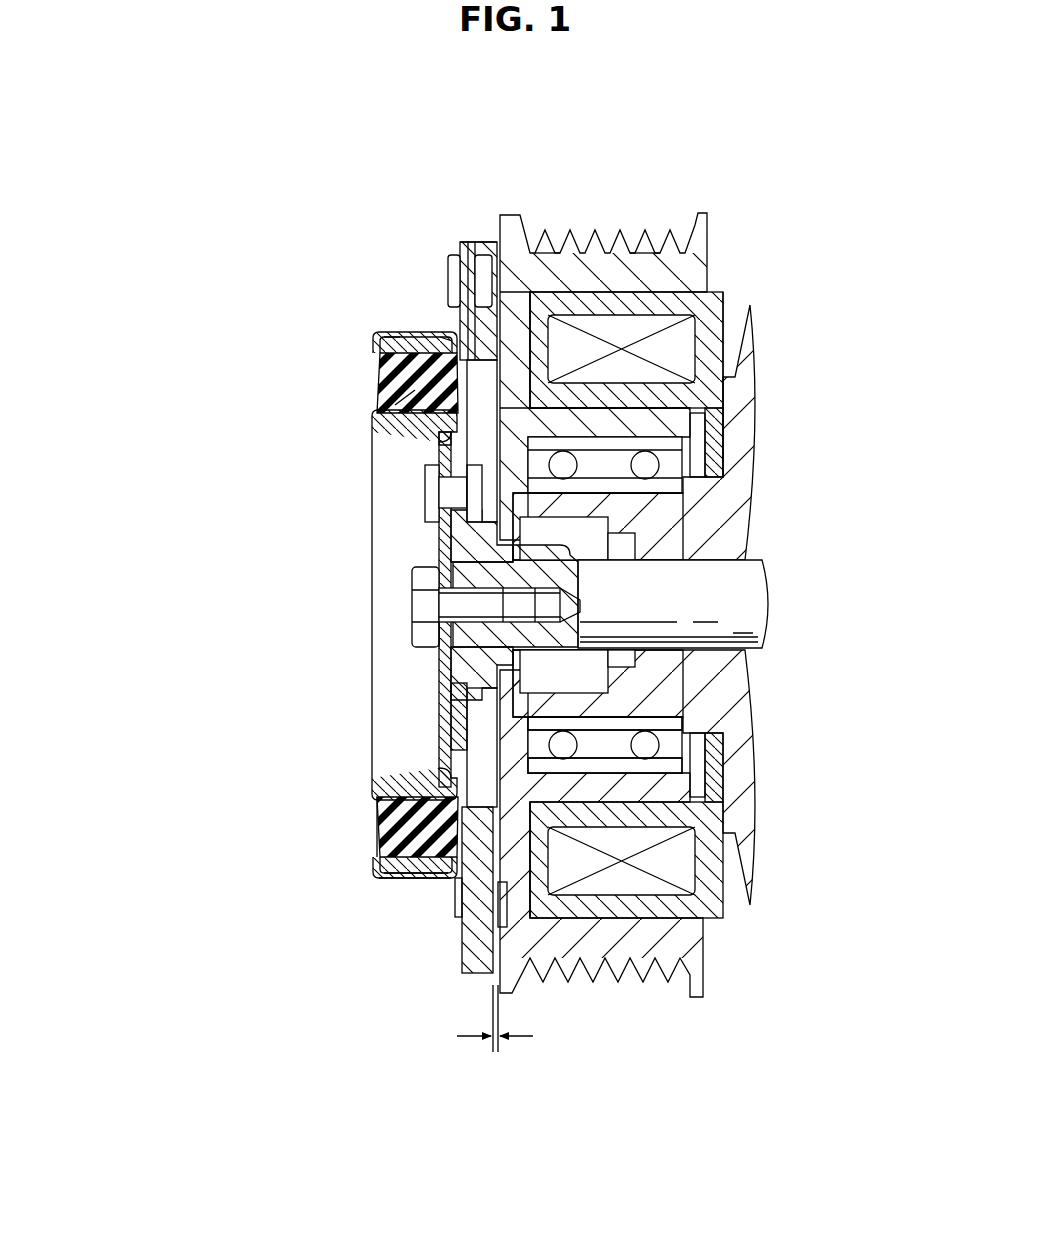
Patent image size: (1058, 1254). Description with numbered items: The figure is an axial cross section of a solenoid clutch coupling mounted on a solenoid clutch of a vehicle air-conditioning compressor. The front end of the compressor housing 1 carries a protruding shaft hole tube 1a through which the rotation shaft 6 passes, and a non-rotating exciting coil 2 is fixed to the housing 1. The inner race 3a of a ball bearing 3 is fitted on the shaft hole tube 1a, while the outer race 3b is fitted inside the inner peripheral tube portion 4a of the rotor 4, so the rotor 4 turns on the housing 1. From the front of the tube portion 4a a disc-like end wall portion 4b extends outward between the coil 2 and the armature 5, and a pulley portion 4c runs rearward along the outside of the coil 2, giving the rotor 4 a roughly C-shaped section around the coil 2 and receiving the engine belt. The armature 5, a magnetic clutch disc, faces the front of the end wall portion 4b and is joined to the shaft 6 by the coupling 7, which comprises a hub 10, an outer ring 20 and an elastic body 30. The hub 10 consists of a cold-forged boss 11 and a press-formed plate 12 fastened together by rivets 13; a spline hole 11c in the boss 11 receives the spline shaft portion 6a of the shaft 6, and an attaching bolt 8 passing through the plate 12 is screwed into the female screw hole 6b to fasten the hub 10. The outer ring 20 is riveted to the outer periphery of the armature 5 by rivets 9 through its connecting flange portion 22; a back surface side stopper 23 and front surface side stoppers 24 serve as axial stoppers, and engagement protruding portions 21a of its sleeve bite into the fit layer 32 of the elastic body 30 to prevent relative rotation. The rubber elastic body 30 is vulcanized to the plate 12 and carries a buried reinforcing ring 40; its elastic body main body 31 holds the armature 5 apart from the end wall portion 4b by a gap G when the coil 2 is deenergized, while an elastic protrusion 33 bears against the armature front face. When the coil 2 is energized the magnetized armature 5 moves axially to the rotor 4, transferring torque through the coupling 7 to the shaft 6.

The compressor housing 1 is at (760, 850).
The shaft hole tube 1a is at (560, 703).
The exciting coil 2 is at (648, 872).
The ball bearing 3 is at (672, 745).
The inner race 3a is at (682, 728).
The outer race 3b is at (662, 770).
The rotor 4 is at (597, 262).
The inner peripheral tube portion 4a is at (633, 425).
The end wall portion 4b is at (540, 262).
The pulley portion 4c is at (640, 262).
The armature 5 is at (475, 935).
The rotation shaft 6 is at (742, 590).
The spline shaft portion 6a is at (545, 545).
The female screw hole 6b is at (425, 612).
The coupling 7 is at (378, 838).
The attaching bolt 8 is at (425, 600).
The rivets 9 is at (455, 290).
The hub 10 is at (432, 683).
The boss 11 is at (455, 700).
The spline hole 11c is at (585, 597).
The plate 12 is at (447, 445).
The rivets 13 is at (432, 493).
The outer ring 20 is at (428, 325).
The engagement protruding portions 21a is at (413, 878).
The connecting flange portion 22 is at (460, 250).
The back surface side stopper 23 is at (513, 350).
The front surface side stoppers 24 is at (393, 338).
The elastic body 30 is at (378, 380).
The elastic body main body 31 is at (405, 397).
The fit layer 32 is at (415, 345).
The elastic protrusion 33 is at (535, 805).
The reinforcing ring 40 is at (420, 885).
The gap G is at (495, 1037).